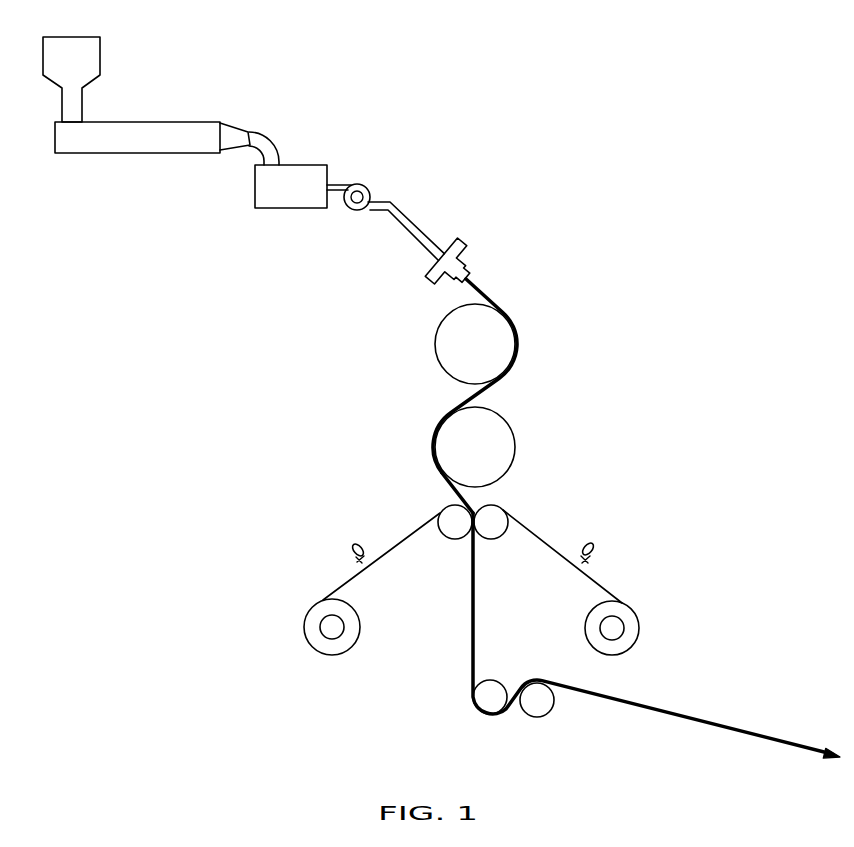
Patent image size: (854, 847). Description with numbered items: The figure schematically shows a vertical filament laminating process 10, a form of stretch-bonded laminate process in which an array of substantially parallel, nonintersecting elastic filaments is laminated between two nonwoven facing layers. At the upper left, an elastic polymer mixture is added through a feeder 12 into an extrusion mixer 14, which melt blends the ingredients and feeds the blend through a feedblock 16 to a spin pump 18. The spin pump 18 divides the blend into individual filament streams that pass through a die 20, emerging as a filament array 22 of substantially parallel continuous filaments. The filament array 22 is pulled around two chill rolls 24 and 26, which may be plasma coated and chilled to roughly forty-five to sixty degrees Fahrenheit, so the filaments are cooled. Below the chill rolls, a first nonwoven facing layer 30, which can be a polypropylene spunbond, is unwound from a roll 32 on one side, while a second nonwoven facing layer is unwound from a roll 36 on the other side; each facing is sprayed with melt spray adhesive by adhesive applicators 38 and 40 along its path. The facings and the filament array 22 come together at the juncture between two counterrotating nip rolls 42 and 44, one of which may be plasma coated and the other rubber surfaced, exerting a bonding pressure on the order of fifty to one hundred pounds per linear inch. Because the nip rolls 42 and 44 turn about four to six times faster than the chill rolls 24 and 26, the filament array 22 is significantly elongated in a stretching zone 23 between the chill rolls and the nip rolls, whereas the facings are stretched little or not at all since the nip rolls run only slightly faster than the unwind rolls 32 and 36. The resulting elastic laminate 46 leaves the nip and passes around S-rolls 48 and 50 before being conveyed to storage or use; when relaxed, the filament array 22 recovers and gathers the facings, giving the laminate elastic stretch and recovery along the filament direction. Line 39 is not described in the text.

The vertical filament laminating process 10 is at (640, 403).
The feeder 12 is at (102, 58).
The extrusion mixer 14 is at (170, 122).
The feedblock 16 is at (313, 163).
The spin pump 18 is at (370, 192).
The die 20 is at (463, 240).
The filament array 22 is at (478, 290).
The stretching zone 23 is at (467, 497).
The chill roll 24 is at (433, 343).
The chill roll 26 is at (513, 423).
The first nonwoven facing layer 30 is at (353, 578).
The roll 32 is at (312, 650).
The roll 36 is at (627, 650).
The adhesive applicator 38 is at (353, 547).
The edge trim 39 is at (587, 570).
The adhesive applicator 40 is at (590, 547).
The nip roll 42 is at (437, 528).
The nip roll 44 is at (497, 538).
The elastic laminate 46 is at (470, 622).
The S-roll 48 is at (493, 682).
The S-roll 50 is at (540, 717).